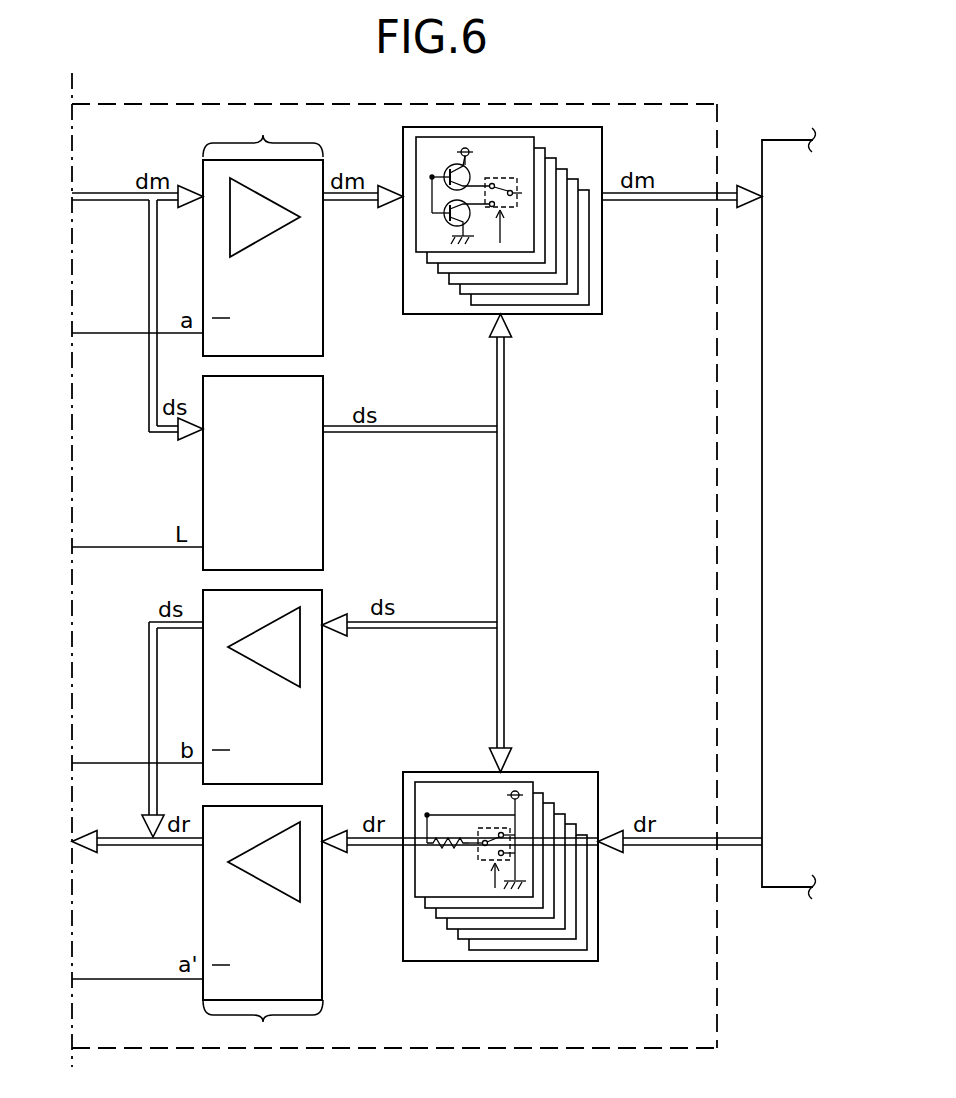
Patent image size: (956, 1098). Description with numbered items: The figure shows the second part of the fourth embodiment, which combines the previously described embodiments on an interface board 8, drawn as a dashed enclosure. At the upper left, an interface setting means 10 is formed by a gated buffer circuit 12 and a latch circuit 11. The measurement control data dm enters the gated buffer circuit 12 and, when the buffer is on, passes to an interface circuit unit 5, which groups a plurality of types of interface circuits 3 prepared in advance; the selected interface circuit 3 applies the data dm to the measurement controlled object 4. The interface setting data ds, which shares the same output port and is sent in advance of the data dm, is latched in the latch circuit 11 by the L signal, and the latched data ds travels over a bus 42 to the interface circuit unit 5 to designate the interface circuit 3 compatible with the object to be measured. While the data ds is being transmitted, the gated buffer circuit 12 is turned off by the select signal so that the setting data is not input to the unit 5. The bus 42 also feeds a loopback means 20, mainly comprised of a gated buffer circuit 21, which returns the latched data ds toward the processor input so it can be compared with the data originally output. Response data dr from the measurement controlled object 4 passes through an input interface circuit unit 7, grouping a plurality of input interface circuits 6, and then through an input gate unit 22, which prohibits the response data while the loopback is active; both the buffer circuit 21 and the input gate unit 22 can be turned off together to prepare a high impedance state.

The interface circuit 3 is at (416, 155).
The measurement controlled object 4 is at (782, 140).
The interface circuit unit 5 is at (602, 277).
The input interface circuit 6 is at (521, 782).
The input interface circuit unit 7 is at (577, 772).
The interface board 8 is at (482, 104).
The interface setting means 10 is at (263, 131).
The latch circuit 11 is at (323, 533).
The gated buffer circuit 12 is at (323, 333).
The loopback means 20 is at (263, 1026).
The gated buffer circuit 21 is at (322, 742).
The input gate unit 22 is at (322, 962).
The bus 42 is at (504, 532).